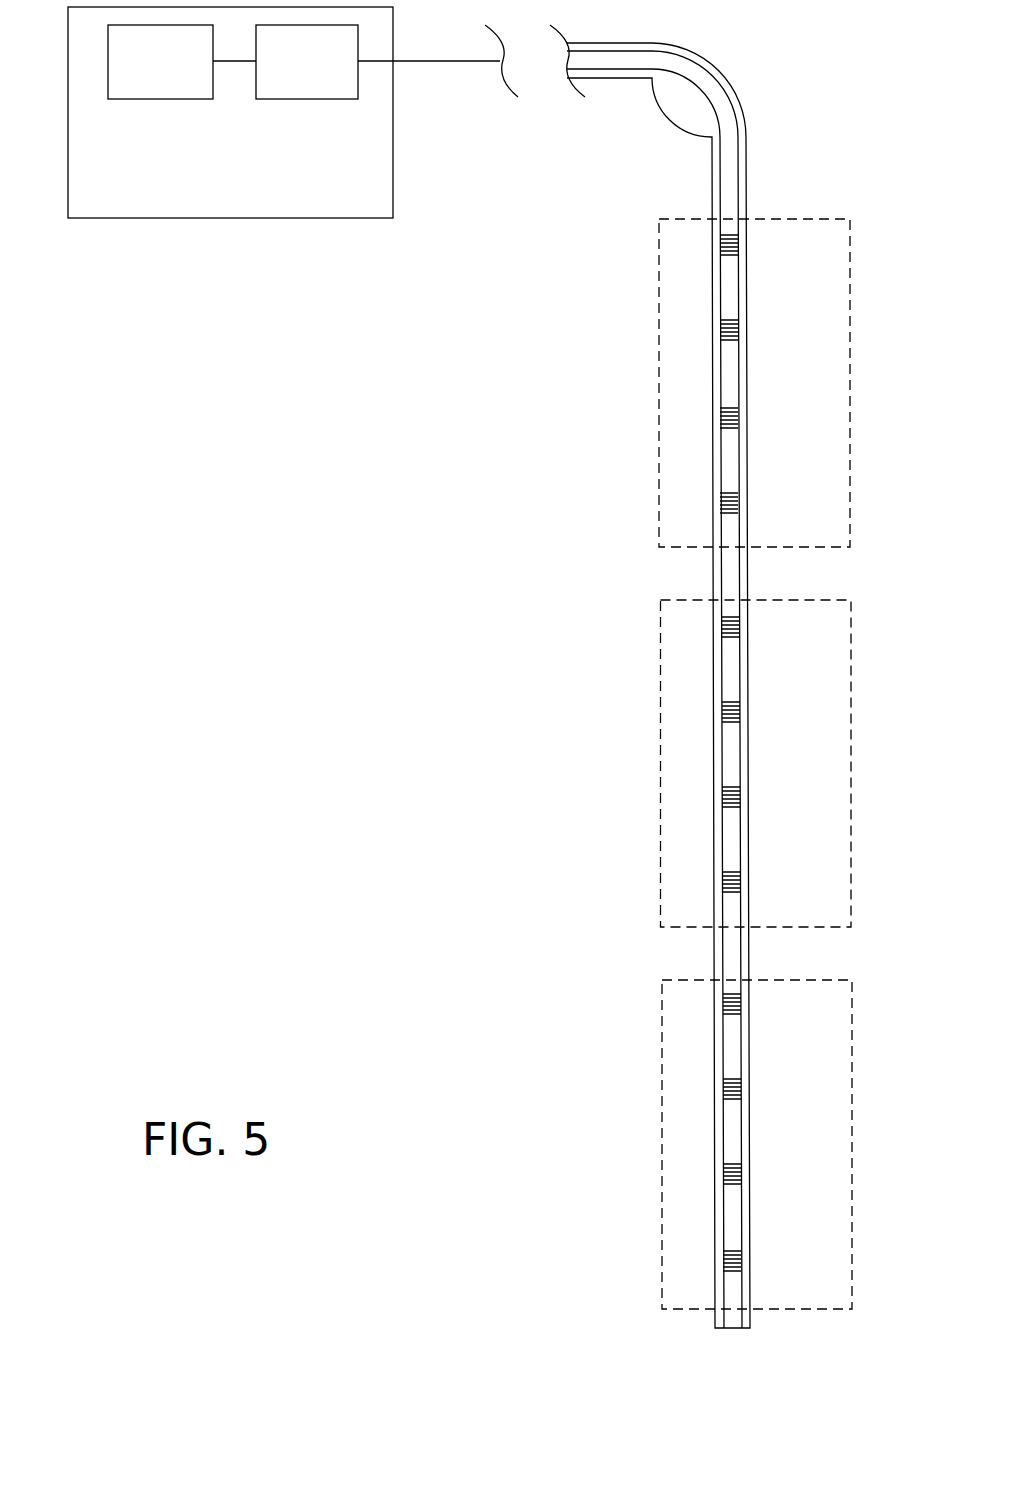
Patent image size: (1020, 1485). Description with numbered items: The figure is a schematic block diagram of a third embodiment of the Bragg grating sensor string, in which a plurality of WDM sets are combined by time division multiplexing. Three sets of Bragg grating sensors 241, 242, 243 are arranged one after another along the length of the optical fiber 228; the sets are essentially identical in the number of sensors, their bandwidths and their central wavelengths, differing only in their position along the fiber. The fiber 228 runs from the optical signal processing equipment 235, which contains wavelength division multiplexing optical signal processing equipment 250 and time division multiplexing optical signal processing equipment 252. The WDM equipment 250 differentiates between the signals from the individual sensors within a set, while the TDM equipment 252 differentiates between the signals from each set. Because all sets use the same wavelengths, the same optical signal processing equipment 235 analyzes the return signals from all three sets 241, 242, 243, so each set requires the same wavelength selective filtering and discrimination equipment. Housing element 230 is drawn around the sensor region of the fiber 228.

The optical fiber 228 is at (473, 62).
The fiber housing tube 230 is at (627, 80).
The optical signal processing equipment 235 is at (230, 142).
The wavelength division multiplexing optical signal processing equipment 250 is at (120, 99).
The time division multiplexing optical signal processing equipment 252 is at (271, 99).
The first set of Bragg grating sensors 241 is at (659, 358).
The second set of Bragg grating sensors 242 is at (660, 738).
The third set of Bragg grating sensors 243 is at (662, 1148).